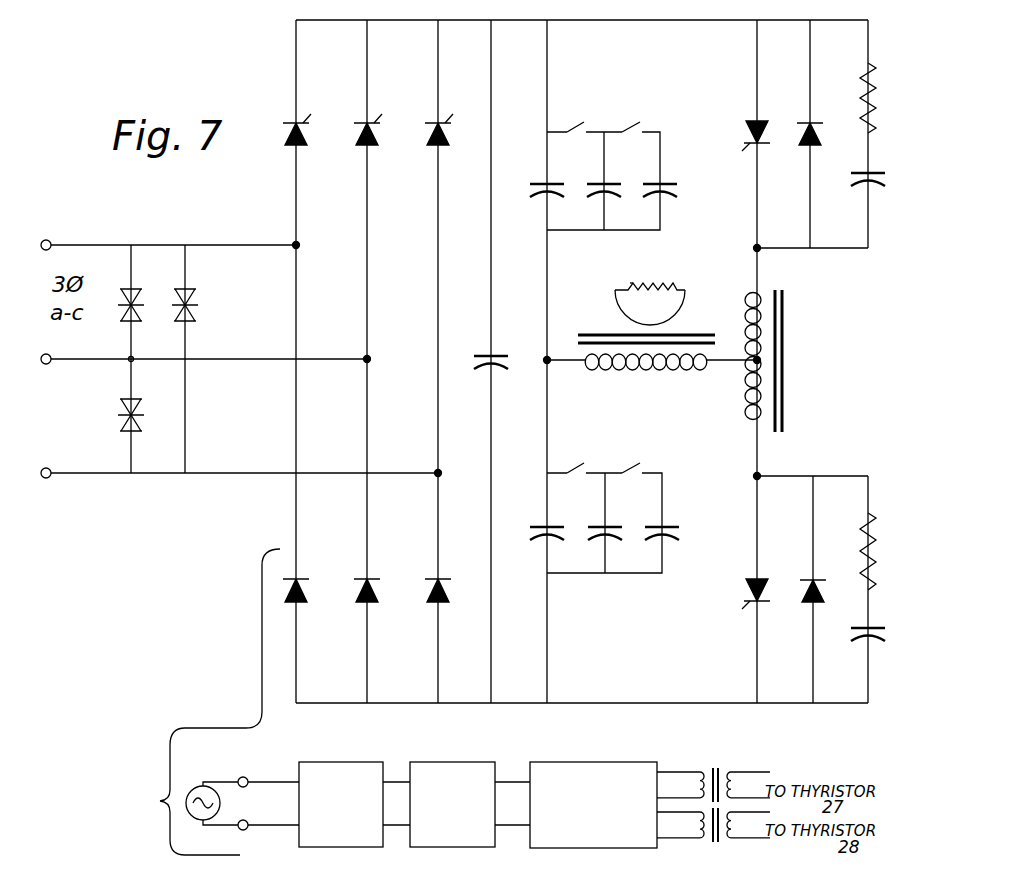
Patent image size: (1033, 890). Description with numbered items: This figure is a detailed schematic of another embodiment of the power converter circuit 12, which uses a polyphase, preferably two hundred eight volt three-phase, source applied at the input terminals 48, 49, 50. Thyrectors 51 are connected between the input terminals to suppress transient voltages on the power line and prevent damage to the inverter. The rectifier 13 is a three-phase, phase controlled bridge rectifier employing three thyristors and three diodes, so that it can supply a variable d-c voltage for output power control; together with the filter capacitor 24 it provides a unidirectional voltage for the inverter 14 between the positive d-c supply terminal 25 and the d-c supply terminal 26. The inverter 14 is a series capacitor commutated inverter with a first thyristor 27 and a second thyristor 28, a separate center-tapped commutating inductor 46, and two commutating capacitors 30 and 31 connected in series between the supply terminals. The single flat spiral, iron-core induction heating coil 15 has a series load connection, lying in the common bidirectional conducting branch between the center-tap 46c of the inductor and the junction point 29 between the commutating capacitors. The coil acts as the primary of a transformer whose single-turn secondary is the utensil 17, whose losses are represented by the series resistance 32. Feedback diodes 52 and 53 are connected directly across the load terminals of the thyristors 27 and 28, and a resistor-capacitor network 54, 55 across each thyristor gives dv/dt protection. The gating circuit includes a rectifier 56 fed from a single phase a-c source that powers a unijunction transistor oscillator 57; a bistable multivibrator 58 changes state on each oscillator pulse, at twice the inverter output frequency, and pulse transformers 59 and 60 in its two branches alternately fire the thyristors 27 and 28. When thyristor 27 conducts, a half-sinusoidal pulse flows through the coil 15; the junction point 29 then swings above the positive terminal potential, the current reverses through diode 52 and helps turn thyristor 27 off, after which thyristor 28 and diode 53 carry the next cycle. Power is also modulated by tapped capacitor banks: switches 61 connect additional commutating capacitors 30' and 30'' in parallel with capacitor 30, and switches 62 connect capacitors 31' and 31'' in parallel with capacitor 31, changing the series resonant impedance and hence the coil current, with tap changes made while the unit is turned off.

The power converter circuit 12 is at (260, 104).
The rectifier 13 is at (412, 342).
The inverter 14 is at (655, 84).
The induction heating coil 15 is at (630, 372).
The utensil 17 is at (688, 304).
The filter capacitor 24 is at (491, 354).
The positive d-c supply terminal 25 is at (482, 22).
The d-c supply terminal 26 is at (600, 703).
The first thyristor 27 is at (760, 122).
The second thyristor 28 is at (760, 580).
The junction point 29 is at (547, 363).
The commutating capacitor 30 is at (537, 175).
The additional commutating capacitor 30' is at (620, 168).
The additional commutating capacitor 30'' is at (683, 170).
The commutating capacitor 31 is at (568, 514).
The additional commutating capacitor 31' is at (627, 512).
The additional commutating capacitor 31'' is at (686, 511).
The series resistance 32 is at (660, 288).
The center-tapped commutating inductor 46 is at (750, 422).
The center-tap 46c is at (755, 363).
The input terminal 48 is at (50, 240).
The input terminal 49 is at (50, 364).
The input terminal 50 is at (47, 479).
The thyrectors 51 is at (190, 312).
The feedback diode 52 is at (813, 122).
The feedback diode 53 is at (815, 580).
The resistor 54 is at (869, 95).
The capacitor 55 is at (869, 190).
The rectifier 56 is at (300, 838).
The unijunction transistor oscillator 57 is at (453, 848).
The bistable multivibrator 58 is at (582, 848).
The pulse transformer 59 is at (715, 768).
The pulse transformer 60 is at (716, 842).
The switches 61 is at (580, 125).
The switches 62 is at (583, 466).